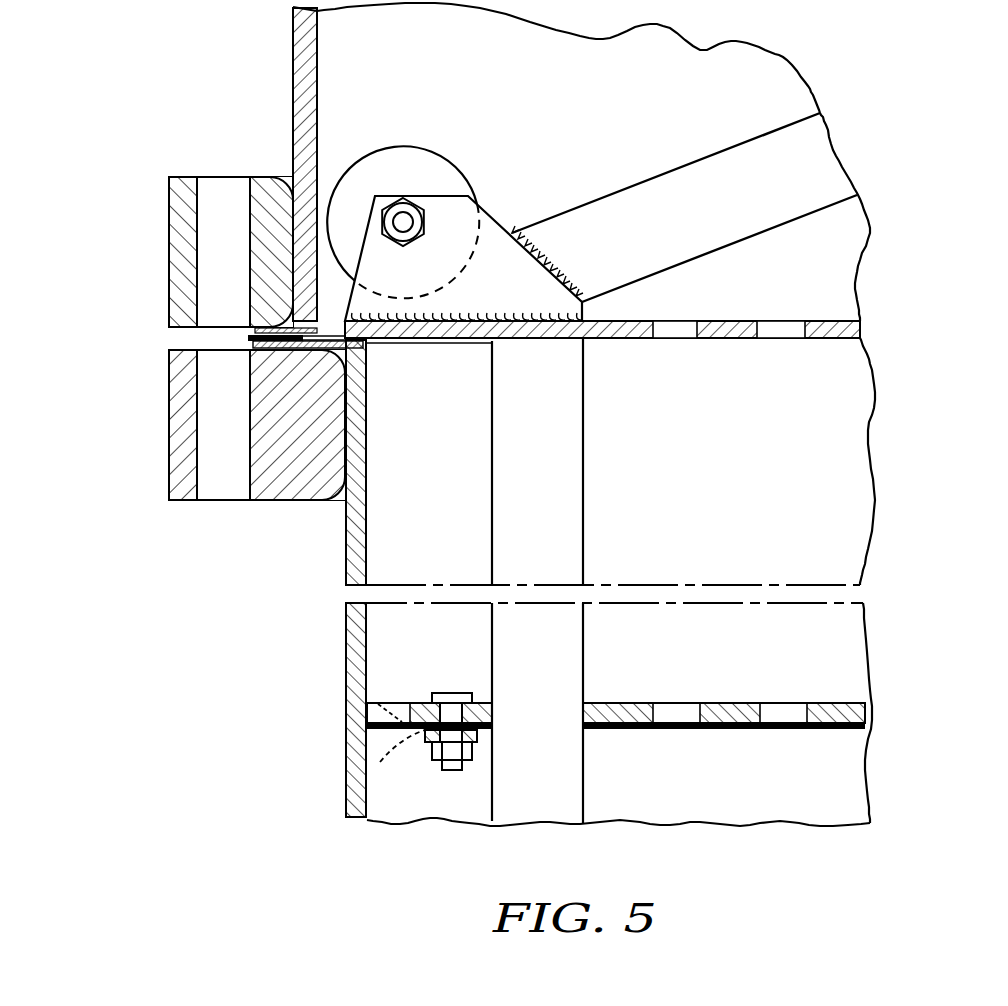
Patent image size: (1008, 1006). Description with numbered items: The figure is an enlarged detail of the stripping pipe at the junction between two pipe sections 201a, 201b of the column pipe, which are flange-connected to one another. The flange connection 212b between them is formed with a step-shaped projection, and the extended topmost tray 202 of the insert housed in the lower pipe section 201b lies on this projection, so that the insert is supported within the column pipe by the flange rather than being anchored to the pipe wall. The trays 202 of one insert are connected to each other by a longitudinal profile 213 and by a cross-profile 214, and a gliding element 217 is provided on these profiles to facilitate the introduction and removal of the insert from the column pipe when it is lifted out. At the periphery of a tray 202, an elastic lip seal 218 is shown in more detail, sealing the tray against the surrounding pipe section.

The pipe section 201a is at (293, 47).
The pipe section 201b is at (353, 538).
The tray 202 is at (740, 342).
The flange connection 212b is at (145, 336).
The longitudinal profile 213 is at (505, 647).
The cross-profile 214 is at (663, 185).
The gliding element 217 is at (405, 160).
The elastic lip seal 218 is at (378, 766).